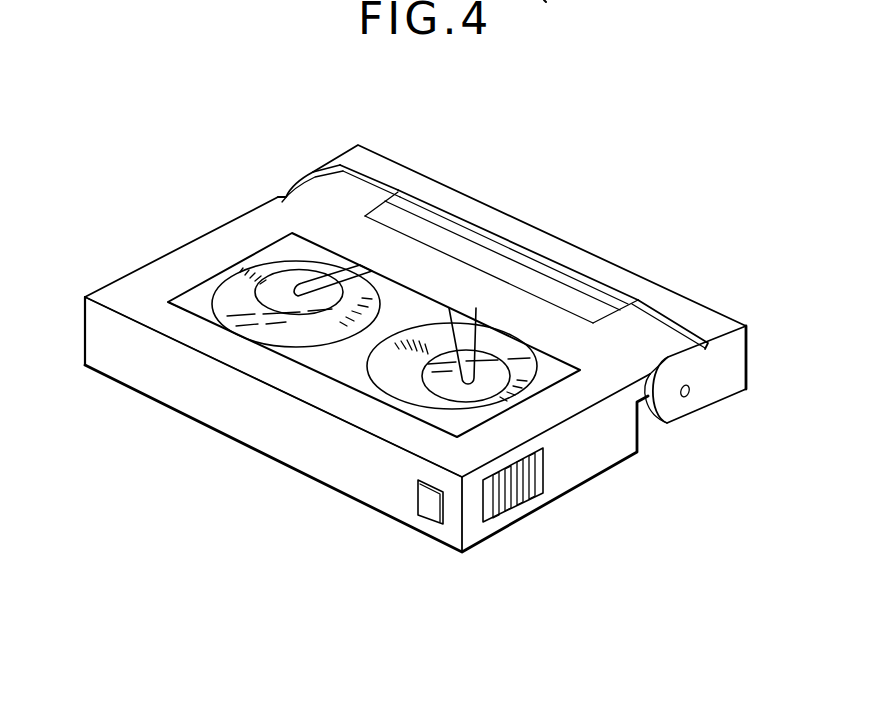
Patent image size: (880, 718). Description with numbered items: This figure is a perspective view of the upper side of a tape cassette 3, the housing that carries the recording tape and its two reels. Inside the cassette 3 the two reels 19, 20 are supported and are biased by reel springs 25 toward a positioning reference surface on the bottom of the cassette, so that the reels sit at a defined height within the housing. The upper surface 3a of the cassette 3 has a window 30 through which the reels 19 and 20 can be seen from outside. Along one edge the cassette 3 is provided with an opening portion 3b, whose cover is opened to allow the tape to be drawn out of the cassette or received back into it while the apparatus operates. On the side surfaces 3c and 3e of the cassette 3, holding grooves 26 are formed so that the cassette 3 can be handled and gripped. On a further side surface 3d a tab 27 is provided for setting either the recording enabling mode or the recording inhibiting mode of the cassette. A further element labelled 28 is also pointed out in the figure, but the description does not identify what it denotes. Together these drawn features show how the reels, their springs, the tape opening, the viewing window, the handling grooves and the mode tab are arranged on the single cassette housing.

The tape cassette 3 is at (190, 232).
The upper surface 3a is at (320, 198).
The opening portion 3b is at (558, 245).
The side surface 3c is at (597, 447).
The side surface 3d is at (273, 425).
The side surface 3e is at (100, 288).
The reel 19 is at (446, 383).
The reel 20 is at (290, 307).
The reel springs 25 is at (462, 330).
The holding grooves 26 is at (545, 468).
The tab 27 is at (432, 508).
The recess wall edge 28 is at (187, 311).
The window 30 is at (195, 294).